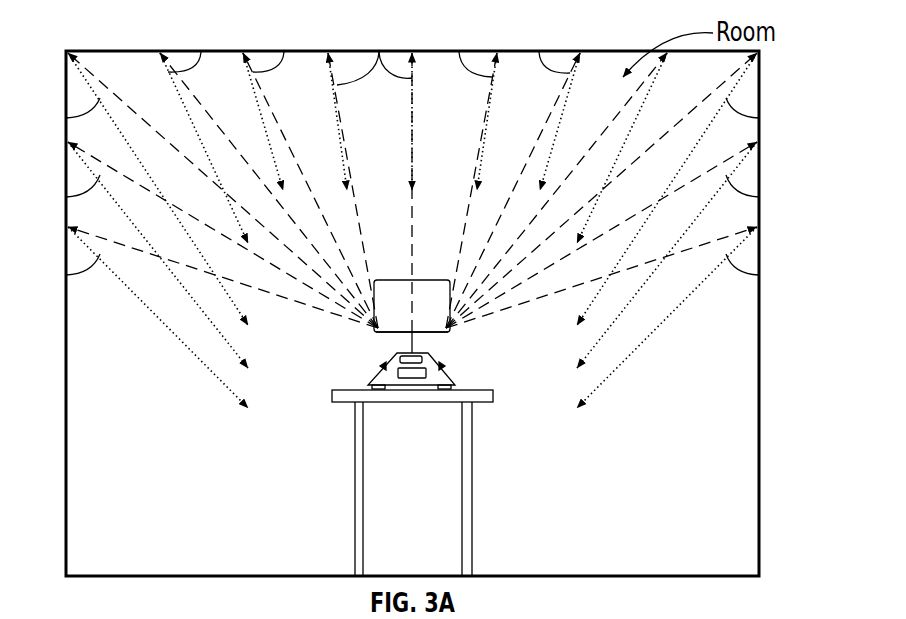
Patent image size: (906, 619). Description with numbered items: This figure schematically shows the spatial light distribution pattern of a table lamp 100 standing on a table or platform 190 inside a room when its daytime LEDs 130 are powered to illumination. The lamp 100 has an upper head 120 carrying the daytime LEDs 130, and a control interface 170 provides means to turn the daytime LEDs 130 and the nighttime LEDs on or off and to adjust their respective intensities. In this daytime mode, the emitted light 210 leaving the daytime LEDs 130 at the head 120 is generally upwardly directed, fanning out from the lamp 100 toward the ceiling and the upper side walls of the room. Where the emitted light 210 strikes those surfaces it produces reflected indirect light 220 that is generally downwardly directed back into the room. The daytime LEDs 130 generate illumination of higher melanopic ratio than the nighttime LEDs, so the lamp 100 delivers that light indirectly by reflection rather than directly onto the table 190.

The table lamp 100 is at (440, 392).
The light head / housing 120 is at (423, 307).
The daytime LEDs 130 is at (373, 328).
The control interface 170 is at (411, 374).
The table or platform 190 is at (480, 402).
The emitted light 210 is at (201, 52).
The reflected indirect light 220 is at (66, 118).